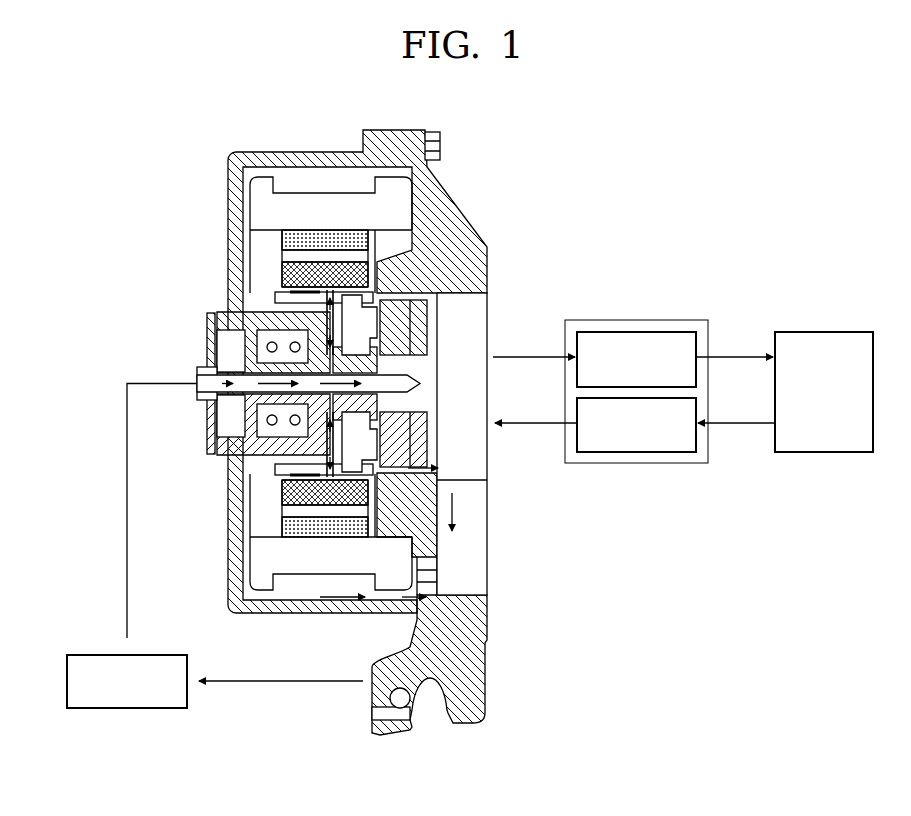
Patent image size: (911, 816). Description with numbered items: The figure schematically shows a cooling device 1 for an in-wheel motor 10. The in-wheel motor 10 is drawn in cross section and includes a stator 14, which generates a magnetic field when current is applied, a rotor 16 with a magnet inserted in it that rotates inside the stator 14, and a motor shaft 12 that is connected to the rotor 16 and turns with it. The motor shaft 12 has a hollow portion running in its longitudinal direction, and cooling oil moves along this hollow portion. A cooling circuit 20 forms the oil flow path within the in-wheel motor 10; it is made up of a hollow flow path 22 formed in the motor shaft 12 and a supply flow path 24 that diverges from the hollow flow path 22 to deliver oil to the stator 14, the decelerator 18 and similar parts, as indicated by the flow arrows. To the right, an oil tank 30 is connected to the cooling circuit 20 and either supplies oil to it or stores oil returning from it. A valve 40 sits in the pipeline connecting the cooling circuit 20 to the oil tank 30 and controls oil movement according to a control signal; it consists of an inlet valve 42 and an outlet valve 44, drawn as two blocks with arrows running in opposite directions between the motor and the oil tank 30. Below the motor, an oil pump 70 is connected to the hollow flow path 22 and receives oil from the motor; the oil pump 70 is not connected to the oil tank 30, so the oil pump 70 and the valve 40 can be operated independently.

The cooling device 1 is at (470, 418).
The in-wheel motor 10 is at (352, 422).
The motor shaft 12 is at (223, 370).
The stator 14 is at (297, 236).
The rotor 16 is at (333, 265).
The decelerator 18 is at (422, 443).
The cooling circuit 20 is at (228, 455).
The hollow flow path 22 is at (252, 340).
The supply flow path 24 is at (259, 259).
The oil tank 30 is at (822, 332).
The valve 40 is at (636, 384).
The inlet valve 42 is at (590, 332).
The outlet valve 44 is at (593, 452).
The oil pump 70 is at (90, 655).